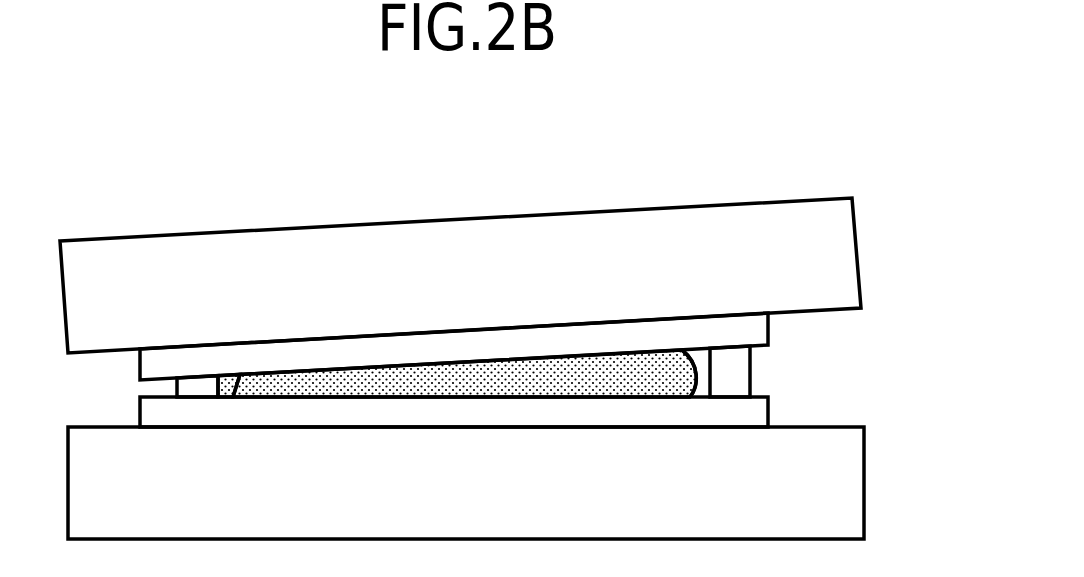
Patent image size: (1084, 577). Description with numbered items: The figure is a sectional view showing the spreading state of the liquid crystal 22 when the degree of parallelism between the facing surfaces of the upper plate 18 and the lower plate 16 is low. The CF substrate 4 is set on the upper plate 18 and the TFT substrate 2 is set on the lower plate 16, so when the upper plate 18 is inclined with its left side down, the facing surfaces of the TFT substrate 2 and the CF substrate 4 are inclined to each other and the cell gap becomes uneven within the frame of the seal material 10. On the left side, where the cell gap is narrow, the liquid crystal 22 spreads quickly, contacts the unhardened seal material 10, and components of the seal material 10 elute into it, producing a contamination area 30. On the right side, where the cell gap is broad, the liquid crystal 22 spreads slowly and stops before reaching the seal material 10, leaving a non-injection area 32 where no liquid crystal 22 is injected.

The upper plate 18 is at (858, 252).
The lower plate 16 is at (862, 490).
The CF substrate 4 is at (768, 327).
The TFT substrate 2 is at (768, 407).
The seal material 10 is at (187, 390).
The liquid crystal 22 is at (473, 377).
The contamination area 30 is at (225, 385).
The non-injection area 32 is at (698, 358).